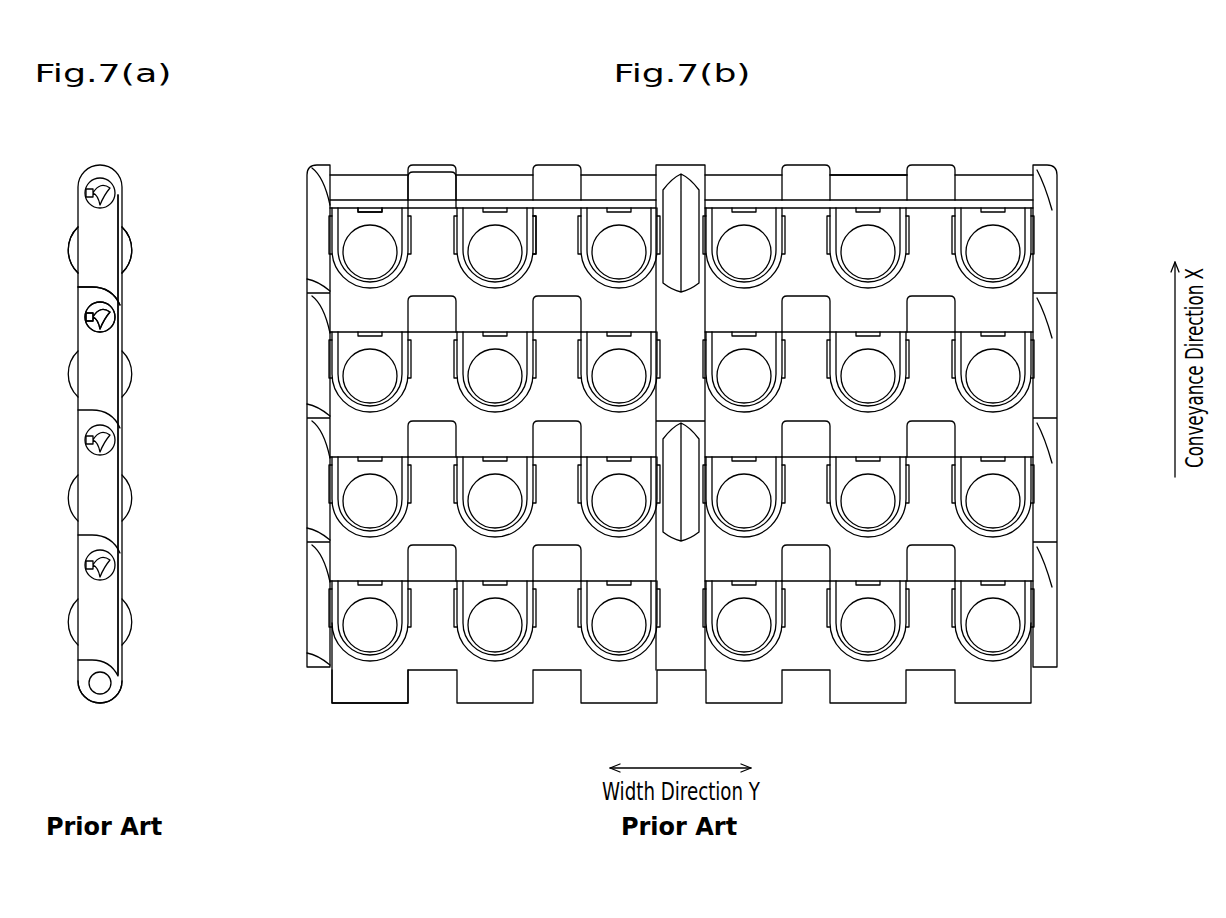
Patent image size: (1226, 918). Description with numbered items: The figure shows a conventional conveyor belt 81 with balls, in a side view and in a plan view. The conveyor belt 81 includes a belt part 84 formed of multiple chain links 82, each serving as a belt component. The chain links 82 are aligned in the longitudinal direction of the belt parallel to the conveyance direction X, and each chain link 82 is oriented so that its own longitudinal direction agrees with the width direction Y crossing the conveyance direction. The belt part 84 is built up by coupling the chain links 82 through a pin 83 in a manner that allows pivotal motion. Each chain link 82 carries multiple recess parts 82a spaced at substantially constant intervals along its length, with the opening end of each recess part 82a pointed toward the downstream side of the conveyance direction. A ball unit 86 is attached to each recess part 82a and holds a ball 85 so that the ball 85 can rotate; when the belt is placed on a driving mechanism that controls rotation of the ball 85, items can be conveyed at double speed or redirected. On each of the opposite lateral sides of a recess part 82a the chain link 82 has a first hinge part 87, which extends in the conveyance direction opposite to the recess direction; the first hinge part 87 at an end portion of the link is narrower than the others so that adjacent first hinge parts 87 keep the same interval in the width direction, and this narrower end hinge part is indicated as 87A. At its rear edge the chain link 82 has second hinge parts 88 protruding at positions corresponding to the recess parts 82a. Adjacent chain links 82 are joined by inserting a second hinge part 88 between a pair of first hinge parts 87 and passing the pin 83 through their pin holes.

In FIG. 7A, the conveyor belt 81 is at (86, 167).
In FIG. 7B, the conveyor belt 81 is at (957, 137).
In FIG. 7A, the chain link 82 is at (93, 277).
In FIG. 7B, the chain link 82 is at (1060, 222).
In FIG. 7B, the recess part 82a is at (524, 283).
In FIG. 7A, the pin 83 is at (115, 314).
In FIG. 7B, the pin 83 is at (858, 185).
In FIG. 7A, the belt part 84 is at (122, 410).
In FIG. 7B, the belt part 84 is at (322, 287).
In FIG. 7A, the ball 85 is at (132, 250).
In FIG. 7B, the ball 85 is at (495, 238).
In FIG. 7B, the ball unit 86 is at (370, 206).
In FIG. 7B, the first hinge part 87 is at (432, 172).
In FIG. 7B, the tall projection 87A is at (681, 195).
In FIG. 7A, the second hinge part 88 is at (118, 694).
In FIG. 7B, the second hinge part 88 is at (368, 695).